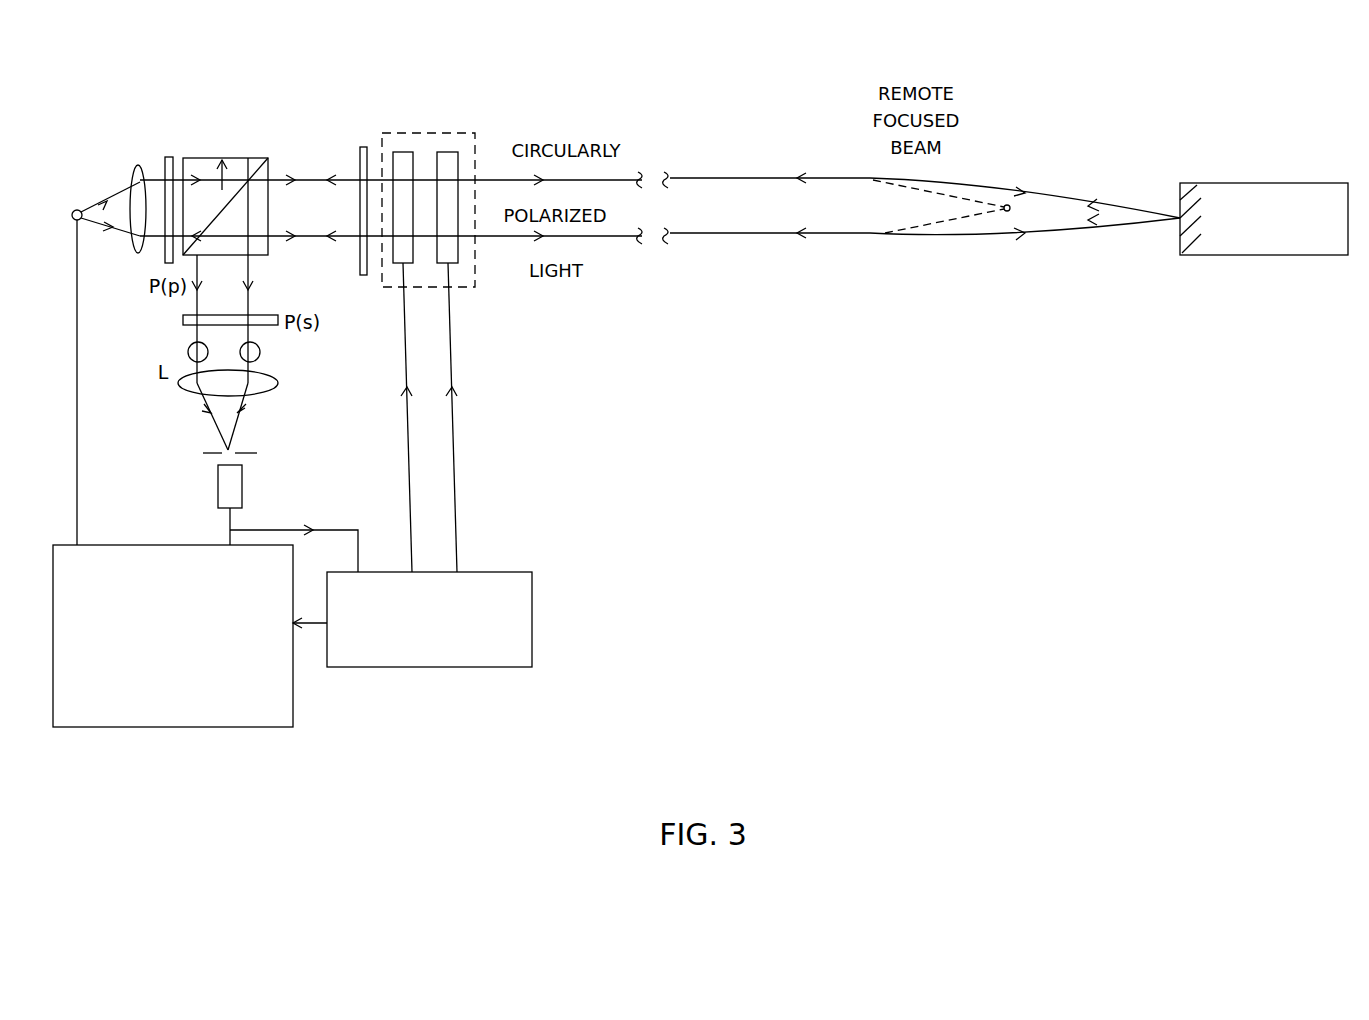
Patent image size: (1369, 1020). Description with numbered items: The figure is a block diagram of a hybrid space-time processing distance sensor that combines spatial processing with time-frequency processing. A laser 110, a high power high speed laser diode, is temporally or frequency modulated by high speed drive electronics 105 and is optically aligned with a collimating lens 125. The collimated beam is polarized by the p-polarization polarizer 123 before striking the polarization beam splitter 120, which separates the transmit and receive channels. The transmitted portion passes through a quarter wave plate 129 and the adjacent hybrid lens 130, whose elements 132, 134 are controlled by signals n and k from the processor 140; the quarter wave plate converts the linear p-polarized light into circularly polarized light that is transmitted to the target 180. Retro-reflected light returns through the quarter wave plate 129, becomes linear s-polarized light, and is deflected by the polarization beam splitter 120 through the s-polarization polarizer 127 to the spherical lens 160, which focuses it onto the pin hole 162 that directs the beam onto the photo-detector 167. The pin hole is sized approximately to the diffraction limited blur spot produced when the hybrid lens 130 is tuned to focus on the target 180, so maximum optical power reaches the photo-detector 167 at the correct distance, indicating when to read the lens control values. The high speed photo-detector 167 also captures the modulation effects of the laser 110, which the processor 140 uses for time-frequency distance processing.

The high speed drive electronics 105 is at (143, 545).
The laser 110 is at (73, 210).
The polarization beam splitter 120 is at (246, 158).
The p-polarization polarizer 123 is at (167, 155).
The collimating lens 125 is at (133, 172).
The s-polarization polarizer 127 is at (265, 315).
The quarter wave plate 129 is at (360, 150).
The hybrid lens 130 is at (478, 140).
The first optical element 132 is at (398, 152).
The second optical element 134 is at (447, 152).
The processor 140 is at (518, 576).
The spherical lens 160 is at (278, 387).
The pin hole 162 is at (225, 449).
The photo-detector 167 is at (242, 490).
The target 180 is at (1260, 183).